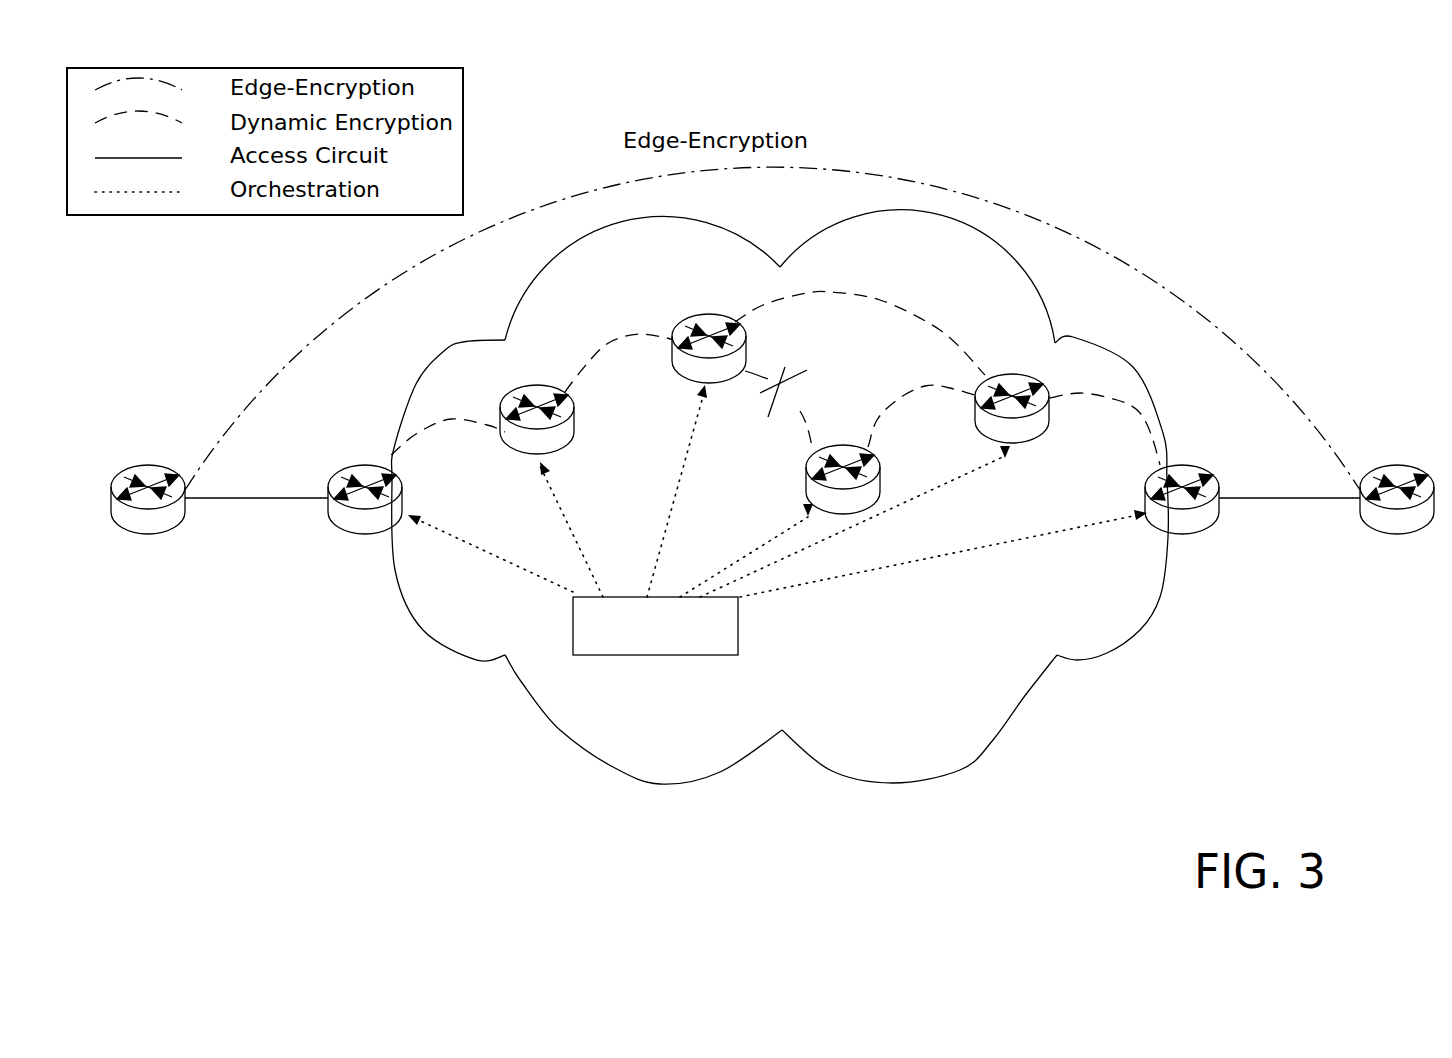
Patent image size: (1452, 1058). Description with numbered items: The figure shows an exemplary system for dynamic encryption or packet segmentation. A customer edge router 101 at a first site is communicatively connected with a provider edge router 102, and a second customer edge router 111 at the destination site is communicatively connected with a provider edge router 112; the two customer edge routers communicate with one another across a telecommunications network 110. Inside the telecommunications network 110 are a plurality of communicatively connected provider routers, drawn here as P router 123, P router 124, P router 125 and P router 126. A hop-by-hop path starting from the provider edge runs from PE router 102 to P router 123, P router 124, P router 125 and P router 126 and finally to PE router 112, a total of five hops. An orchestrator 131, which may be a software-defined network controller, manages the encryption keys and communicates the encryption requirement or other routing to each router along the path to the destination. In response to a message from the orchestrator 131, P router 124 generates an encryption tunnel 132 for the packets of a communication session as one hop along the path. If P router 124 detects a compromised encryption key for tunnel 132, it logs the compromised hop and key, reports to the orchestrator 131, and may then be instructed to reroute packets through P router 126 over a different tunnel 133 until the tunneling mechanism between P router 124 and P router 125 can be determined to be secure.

The customer edge router 101 is at (148, 462).
The provider edge router 102 is at (365, 462).
The telecommunications network 110 is at (1075, 660).
The customer edge router 111 is at (1397, 462).
The provider edge router 112 is at (1182, 462).
The provider router 123 is at (537, 384).
The provider router 124 is at (708, 313).
The provider router 125 is at (843, 445).
The provider router 126 is at (1012, 374).
The orchestrator 131 is at (655, 656).
The tunnel 132 is at (806, 414).
The tunnel 133 is at (885, 298).